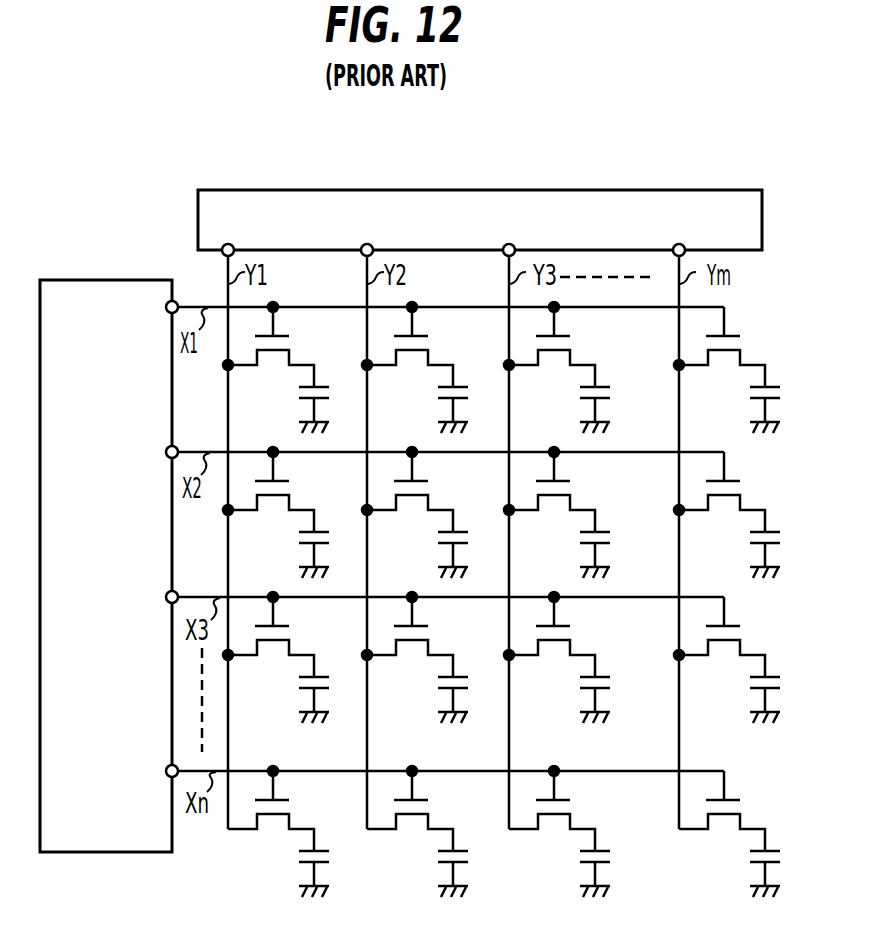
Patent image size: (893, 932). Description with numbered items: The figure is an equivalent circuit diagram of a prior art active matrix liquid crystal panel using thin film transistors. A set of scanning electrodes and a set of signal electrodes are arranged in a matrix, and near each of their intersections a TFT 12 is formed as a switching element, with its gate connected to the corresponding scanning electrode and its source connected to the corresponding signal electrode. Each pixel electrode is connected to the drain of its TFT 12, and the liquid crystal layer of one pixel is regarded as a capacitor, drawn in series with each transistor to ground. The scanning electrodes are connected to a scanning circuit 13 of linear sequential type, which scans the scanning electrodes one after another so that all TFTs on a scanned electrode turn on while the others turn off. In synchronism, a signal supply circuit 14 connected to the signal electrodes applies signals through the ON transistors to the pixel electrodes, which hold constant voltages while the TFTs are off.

The TFT 12 is at (290, 343).
The scanning circuit 13 is at (120, 280).
The signal supply circuit 14 is at (341, 190).